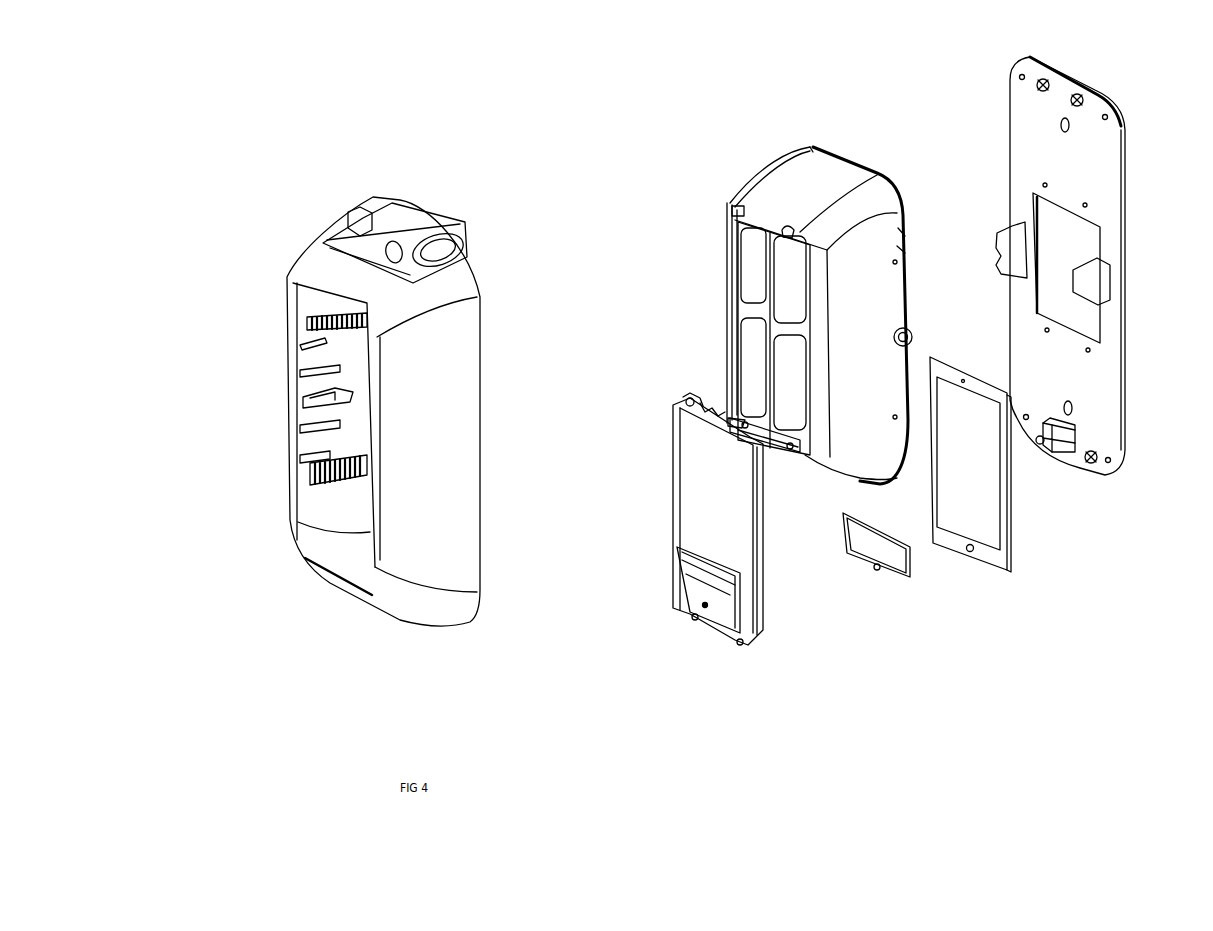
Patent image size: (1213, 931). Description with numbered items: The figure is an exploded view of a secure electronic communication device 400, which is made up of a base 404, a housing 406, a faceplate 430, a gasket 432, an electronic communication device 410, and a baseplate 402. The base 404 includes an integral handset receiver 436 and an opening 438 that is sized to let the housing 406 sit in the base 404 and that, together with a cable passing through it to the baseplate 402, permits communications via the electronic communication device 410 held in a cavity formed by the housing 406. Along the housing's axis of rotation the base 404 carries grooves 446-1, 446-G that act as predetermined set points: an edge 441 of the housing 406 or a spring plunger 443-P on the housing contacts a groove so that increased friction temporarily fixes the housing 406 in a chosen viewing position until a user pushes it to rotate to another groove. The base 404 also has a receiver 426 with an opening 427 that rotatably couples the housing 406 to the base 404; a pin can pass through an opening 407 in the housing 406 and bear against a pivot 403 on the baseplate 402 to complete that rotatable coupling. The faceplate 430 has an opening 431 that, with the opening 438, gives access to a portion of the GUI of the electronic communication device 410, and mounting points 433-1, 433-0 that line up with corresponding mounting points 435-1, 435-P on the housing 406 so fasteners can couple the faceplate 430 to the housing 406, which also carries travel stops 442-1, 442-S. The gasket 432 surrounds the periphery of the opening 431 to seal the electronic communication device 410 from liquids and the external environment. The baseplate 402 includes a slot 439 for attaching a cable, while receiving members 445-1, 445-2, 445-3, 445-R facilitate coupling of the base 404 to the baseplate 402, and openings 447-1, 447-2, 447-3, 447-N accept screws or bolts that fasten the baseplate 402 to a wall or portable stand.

The secure electronic communication device 400 is at (230, 85).
The baseplate 402 is at (1107, 377).
The pivot 403 is at (1110, 270).
The base 404 is at (397, 620).
The housing 406 is at (853, 473).
The opening 407 is at (907, 330).
The electronic communication device 410 is at (997, 570).
The receiver 426 is at (298, 352).
The opening 427 is at (335, 398).
The faceplate 430 is at (737, 647).
The opening 431 is at (717, 577).
The gasket 432 is at (903, 577).
The mounting point 433-0 is at (737, 423).
The mounting point 433-1 is at (693, 410).
The corresponding mounting point 435-1 is at (733, 205).
The corresponding mounting point 435-P is at (787, 232).
The integral handset receiver 436 is at (427, 247).
The opening 438 is at (343, 548).
The slot 439 is at (1060, 460).
The edge 441 is at (900, 232).
The travel stop 442-1 is at (823, 142).
The travel stop 442-S is at (880, 172).
The spring plunger 443-P is at (898, 250).
The receiving member 445-1 is at (1045, 82).
The receiving member 445-2 is at (1078, 93).
The receiving member 445-3 is at (1040, 447).
The receiving member 445-R is at (1093, 467).
The groove 446-1 is at (312, 482).
The groove 446-G is at (302, 340).
The opening 447-1 is at (1018, 72).
The opening 447-2 is at (1108, 104).
The opening 447-3 is at (1025, 413).
The opening 447-N is at (1109, 465).